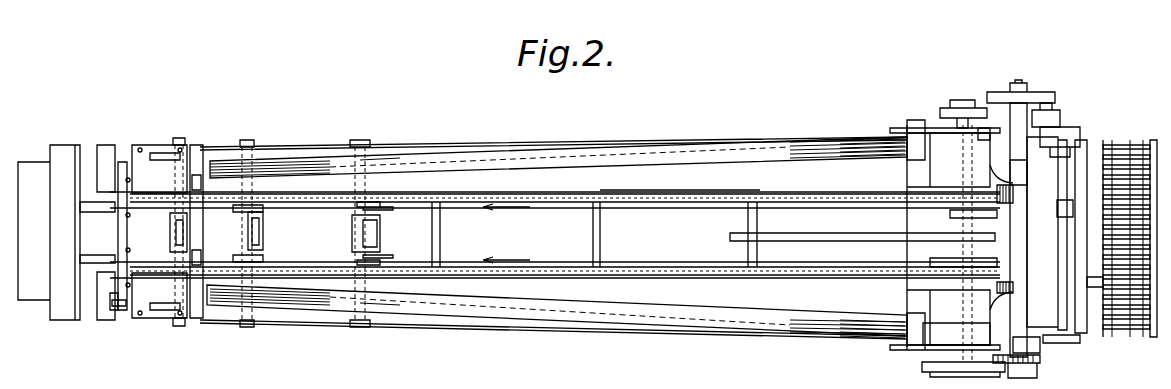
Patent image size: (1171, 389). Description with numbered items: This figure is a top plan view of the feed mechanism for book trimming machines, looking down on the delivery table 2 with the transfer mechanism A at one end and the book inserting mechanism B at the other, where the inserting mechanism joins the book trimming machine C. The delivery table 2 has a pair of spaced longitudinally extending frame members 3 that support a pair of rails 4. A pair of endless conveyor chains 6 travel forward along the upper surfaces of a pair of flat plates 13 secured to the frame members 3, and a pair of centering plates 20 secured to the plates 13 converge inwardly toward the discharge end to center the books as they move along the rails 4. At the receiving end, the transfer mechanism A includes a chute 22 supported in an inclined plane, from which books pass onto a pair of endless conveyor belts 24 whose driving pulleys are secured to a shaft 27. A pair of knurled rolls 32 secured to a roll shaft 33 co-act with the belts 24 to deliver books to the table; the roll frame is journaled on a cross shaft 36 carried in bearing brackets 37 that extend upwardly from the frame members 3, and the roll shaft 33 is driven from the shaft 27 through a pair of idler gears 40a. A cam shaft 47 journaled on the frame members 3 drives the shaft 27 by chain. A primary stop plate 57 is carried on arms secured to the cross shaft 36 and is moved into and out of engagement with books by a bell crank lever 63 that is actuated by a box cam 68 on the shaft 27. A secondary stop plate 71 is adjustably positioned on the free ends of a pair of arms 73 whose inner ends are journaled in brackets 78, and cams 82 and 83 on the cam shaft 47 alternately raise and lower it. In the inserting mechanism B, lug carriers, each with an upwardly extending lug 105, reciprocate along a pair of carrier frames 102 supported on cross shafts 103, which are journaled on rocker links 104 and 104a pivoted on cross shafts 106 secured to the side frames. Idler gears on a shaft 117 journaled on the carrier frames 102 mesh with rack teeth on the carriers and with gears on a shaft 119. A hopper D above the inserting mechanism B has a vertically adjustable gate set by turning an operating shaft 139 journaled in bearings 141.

The delivery table 2 is at (442, 143).
The frame member 3 is at (472, 152).
The rail 4 is at (750, 191).
The endless conveyor chain 6 is at (556, 266).
The flat plate 13 is at (630, 290).
The centering plate 20 is at (514, 163).
The chute 22 is at (1123, 140).
The endless conveyor belt 24 is at (1087, 282).
The shaft 27 is at (1010, 178).
The knurled roll 32 is at (1013, 190).
The roll shaft 33 is at (1020, 250).
The cross shaft 36 is at (1060, 200).
The bearing bracket 37 is at (1077, 132).
The idler gear 40a is at (1040, 358).
The cam shaft 47 is at (960, 238).
The primary stop plate 57 is at (1075, 300).
The bell crank lever 63 is at (1055, 115).
The box cam 68 is at (1055, 102).
The secondary stop plate 71 is at (905, 150).
The arm 73 is at (905, 128).
The bracket 78 is at (980, 138).
The cam 82 is at (945, 108).
The cam 83 is at (925, 365).
The carrier frame 102 is at (152, 212).
The cross shaft 103 is at (380, 217).
The rocker link 104 is at (177, 265).
The rocker link 104a is at (352, 233).
The lug 105 is at (97, 207).
The cross shaft 106 is at (178, 138).
The shaft 117 is at (263, 227).
The shaft 119 is at (242, 318).
The operating shaft 139 is at (110, 300).
The bearing 141 is at (123, 312).
The transfer mechanism A is at (1056, 80).
The book inserting mechanism B is at (198, 130).
The book trimming machine C is at (48, 323).
The hopper D is at (182, 322).